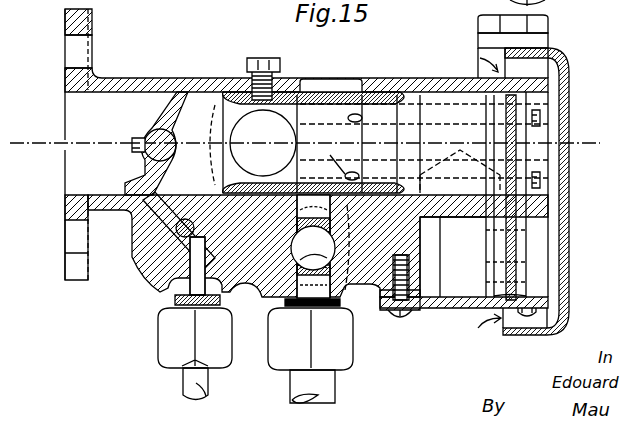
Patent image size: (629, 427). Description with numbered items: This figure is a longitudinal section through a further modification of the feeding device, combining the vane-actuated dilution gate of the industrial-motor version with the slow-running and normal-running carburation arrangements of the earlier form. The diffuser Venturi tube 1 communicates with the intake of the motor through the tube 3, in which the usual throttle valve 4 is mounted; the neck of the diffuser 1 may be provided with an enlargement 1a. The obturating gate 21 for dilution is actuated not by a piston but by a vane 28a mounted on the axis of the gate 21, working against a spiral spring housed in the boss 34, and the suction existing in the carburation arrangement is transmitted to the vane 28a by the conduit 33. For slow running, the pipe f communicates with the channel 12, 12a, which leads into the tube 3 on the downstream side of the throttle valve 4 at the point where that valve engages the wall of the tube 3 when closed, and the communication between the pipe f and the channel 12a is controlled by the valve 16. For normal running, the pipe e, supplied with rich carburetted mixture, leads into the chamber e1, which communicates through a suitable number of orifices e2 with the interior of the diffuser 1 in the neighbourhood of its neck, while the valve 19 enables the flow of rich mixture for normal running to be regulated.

The tube 3 is at (110, 96).
The throttle valve 4 is at (162, 143).
The diffuser Venturi tube 1 is at (288, 94).
The enlargement 1a is at (346, 100).
The conduit 33 is at (438, 48).
The boss 34 is at (498, 58).
The obturating gate 21 is at (520, 140).
The vane 28a is at (536, 240).
The valve 16 is at (200, 237).
The channel 12a is at (160, 208).
The channel 12 is at (168, 300).
The valve 19 is at (264, 296).
The pipe e is at (304, 302).
The chamber e1 is at (386, 286).
The orifices e2 is at (350, 120).
The pipe f is at (210, 396).